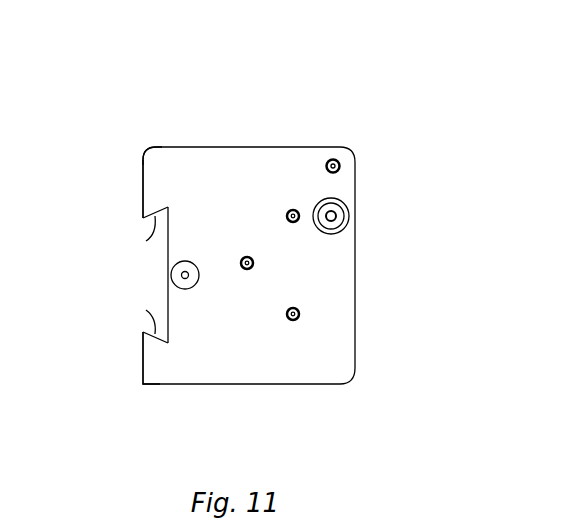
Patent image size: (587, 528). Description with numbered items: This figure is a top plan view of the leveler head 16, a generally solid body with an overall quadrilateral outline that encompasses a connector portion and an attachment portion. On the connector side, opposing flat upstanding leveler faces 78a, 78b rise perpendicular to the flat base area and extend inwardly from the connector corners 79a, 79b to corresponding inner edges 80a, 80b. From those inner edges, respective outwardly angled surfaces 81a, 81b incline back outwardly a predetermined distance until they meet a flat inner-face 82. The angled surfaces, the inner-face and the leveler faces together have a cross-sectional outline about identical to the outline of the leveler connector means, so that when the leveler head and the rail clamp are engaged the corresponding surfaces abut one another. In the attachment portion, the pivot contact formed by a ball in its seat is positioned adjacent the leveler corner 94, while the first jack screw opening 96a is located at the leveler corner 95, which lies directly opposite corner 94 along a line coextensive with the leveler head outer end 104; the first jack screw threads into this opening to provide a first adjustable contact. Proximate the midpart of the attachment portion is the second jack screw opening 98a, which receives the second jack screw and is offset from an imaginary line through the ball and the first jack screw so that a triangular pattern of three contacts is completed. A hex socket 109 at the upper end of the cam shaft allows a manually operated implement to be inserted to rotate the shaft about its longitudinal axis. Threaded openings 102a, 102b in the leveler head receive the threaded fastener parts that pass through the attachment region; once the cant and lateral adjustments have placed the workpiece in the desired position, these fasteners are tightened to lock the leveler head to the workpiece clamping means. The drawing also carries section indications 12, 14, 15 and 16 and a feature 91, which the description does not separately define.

The section line 12- 12 is at (350, 284).
The section line 14- 14 is at (247, 419).
The section line 15- 15 is at (293, 419).
The leveler head 16 is at (333, 419).
The leveler face 78a is at (143, 182).
The leveler face 78b is at (143, 370).
The connector corner 79a is at (142, 147).
The connector corner 79b is at (143, 385).
The inner edge 80a is at (148, 217).
The inner edge 80b is at (140, 332).
The outwardly angled surface 81a is at (132, 239).
The outwardly angled surface 81b is at (150, 332).
The inner-face 82 is at (168, 283).
The pivot hole 91 is at (192, 289).
The leveler corner 94 is at (352, 380).
The leveler corner 95 is at (350, 148).
The first jack screw opening 96a is at (337, 150).
The second jack screw opening 98a is at (247, 257).
The threaded opening 102a is at (307, 320).
The threaded opening 102b is at (302, 206).
The leveler head outer end 104 is at (355, 265).
The hex socket 109 is at (335, 216).